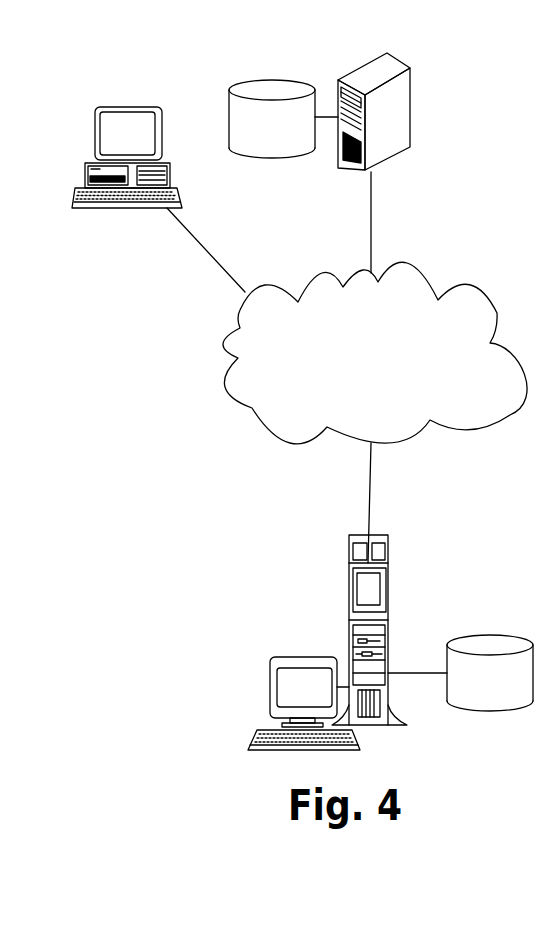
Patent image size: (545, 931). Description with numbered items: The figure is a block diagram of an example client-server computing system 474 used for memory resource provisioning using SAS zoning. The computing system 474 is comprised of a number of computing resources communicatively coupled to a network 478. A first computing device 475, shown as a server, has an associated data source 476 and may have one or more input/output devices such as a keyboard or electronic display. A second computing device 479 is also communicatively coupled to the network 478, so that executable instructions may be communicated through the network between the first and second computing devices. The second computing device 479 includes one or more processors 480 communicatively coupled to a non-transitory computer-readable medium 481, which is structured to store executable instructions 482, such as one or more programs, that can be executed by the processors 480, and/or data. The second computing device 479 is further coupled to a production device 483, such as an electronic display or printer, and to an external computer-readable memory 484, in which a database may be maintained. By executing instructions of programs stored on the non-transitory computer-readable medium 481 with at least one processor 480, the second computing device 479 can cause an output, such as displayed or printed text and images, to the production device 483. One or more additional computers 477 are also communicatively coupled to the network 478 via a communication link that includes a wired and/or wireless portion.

The computing system 474 is at (74, 108).
The first computing device 475 is at (410, 105).
The data source 476 is at (262, 82).
The additional computers 477 is at (125, 104).
The network 478 is at (482, 288).
The second computing device 479 is at (368, 630).
The processors 480 is at (353, 551).
The non-transitory computer-readable medium 481 is at (353, 572).
The executable instructions 482 is at (357, 595).
The production device 483 is at (270, 685).
The external computer-readable memory 484 is at (490, 637).